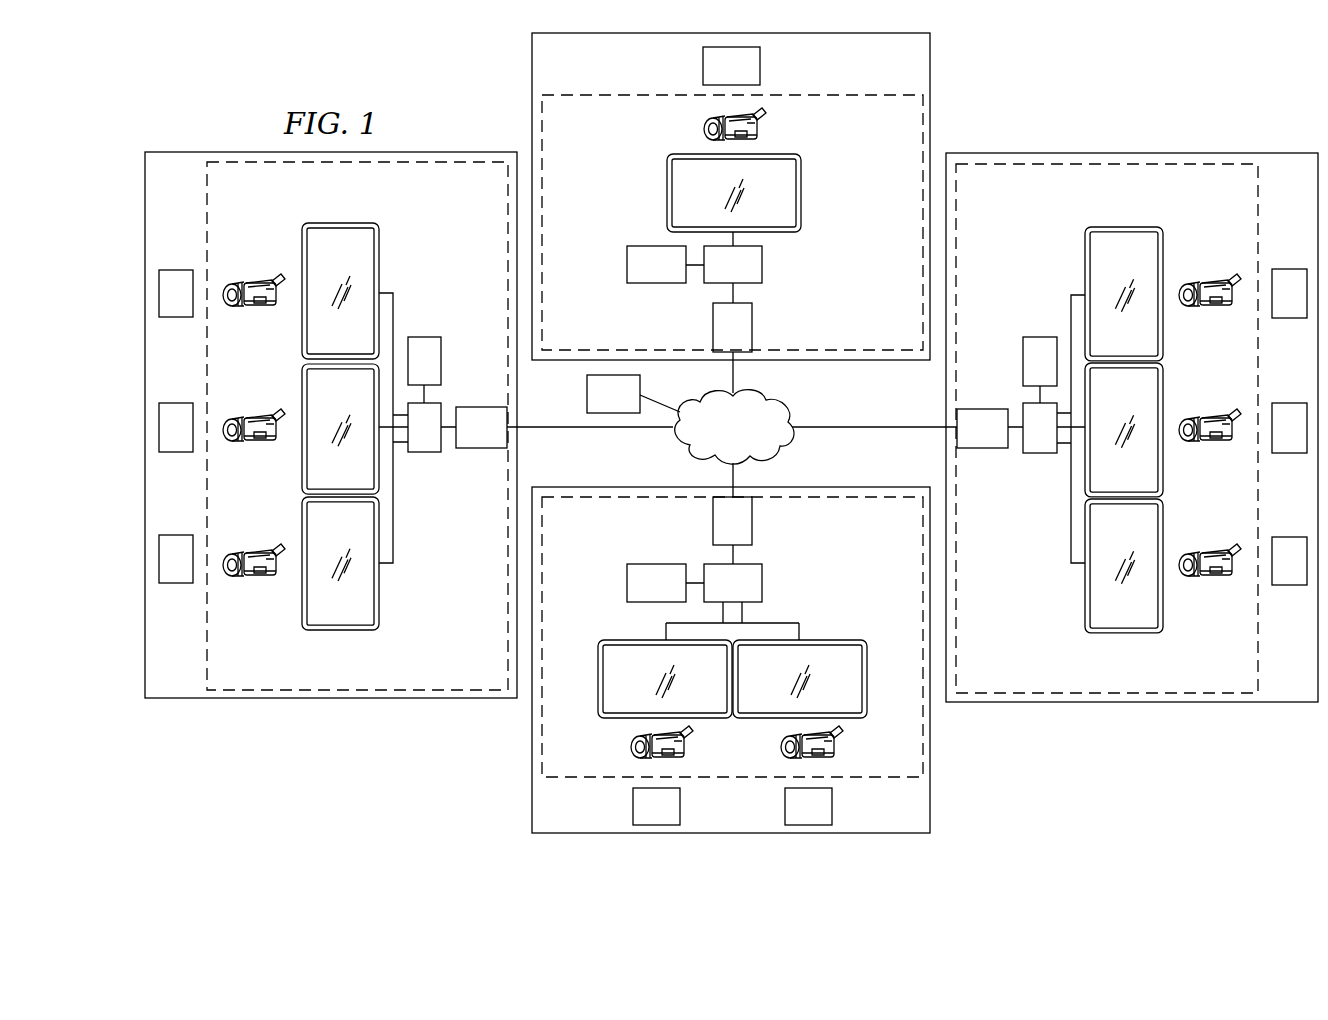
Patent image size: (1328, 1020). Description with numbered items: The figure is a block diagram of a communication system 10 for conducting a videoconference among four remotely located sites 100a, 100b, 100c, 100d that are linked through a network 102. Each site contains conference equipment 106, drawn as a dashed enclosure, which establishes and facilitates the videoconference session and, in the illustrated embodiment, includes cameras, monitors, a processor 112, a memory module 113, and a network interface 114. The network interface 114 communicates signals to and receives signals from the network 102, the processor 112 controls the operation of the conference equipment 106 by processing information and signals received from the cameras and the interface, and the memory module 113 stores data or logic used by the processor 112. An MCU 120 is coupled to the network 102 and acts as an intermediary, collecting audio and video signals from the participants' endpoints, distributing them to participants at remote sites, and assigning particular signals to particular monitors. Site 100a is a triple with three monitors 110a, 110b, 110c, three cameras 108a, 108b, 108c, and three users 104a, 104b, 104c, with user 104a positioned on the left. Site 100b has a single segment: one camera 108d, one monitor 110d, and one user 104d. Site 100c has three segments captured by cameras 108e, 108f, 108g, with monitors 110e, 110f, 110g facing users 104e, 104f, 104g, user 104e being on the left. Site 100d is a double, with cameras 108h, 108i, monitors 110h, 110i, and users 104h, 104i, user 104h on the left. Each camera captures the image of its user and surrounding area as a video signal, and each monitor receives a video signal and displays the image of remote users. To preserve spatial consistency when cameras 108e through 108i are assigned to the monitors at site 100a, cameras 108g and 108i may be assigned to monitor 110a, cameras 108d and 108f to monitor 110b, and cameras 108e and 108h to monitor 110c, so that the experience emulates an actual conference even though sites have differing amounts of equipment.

The communication system 10 is at (411, 769).
The site 100a is at (1203, 703).
The site 100b is at (934, 129).
The site 100c is at (263, 698).
The site 100d is at (934, 770).
The network 102 is at (792, 440).
The user 104a is at (1290, 585).
The user 104b is at (1290, 453).
The user 104c is at (1290, 269).
The user 104d is at (703, 63).
The user 104e is at (176, 270).
The user 104f is at (176, 452).
The user 104g is at (176, 583).
The user 104h is at (633, 809).
The user 104i is at (832, 810).
The conference equipment 106 is at (468, 229).
The camera 108a is at (1208, 578).
The camera 108b is at (1208, 443).
The camera 108c is at (1218, 279).
The camera 108d is at (765, 123).
The camera 108e is at (262, 278).
The camera 108f is at (250, 445).
The camera 108g is at (250, 578).
The camera 108h is at (625, 749).
The camera 108i is at (840, 751).
The monitor 110a is at (1132, 633).
The monitor 110b is at (1163, 385).
The monitor 110c is at (1133, 227).
The monitor 110d is at (800, 190).
The monitor 110e is at (331, 223).
The monitor 110f is at (302, 384).
The monitor 110g is at (330, 630).
The monitor 110h is at (610, 640).
The monitor 110i is at (850, 640).
The processor 112 is at (423, 452).
The memory module 113 is at (423, 337).
The network interface 114 is at (481, 407).
The MCU 120 is at (587, 392).